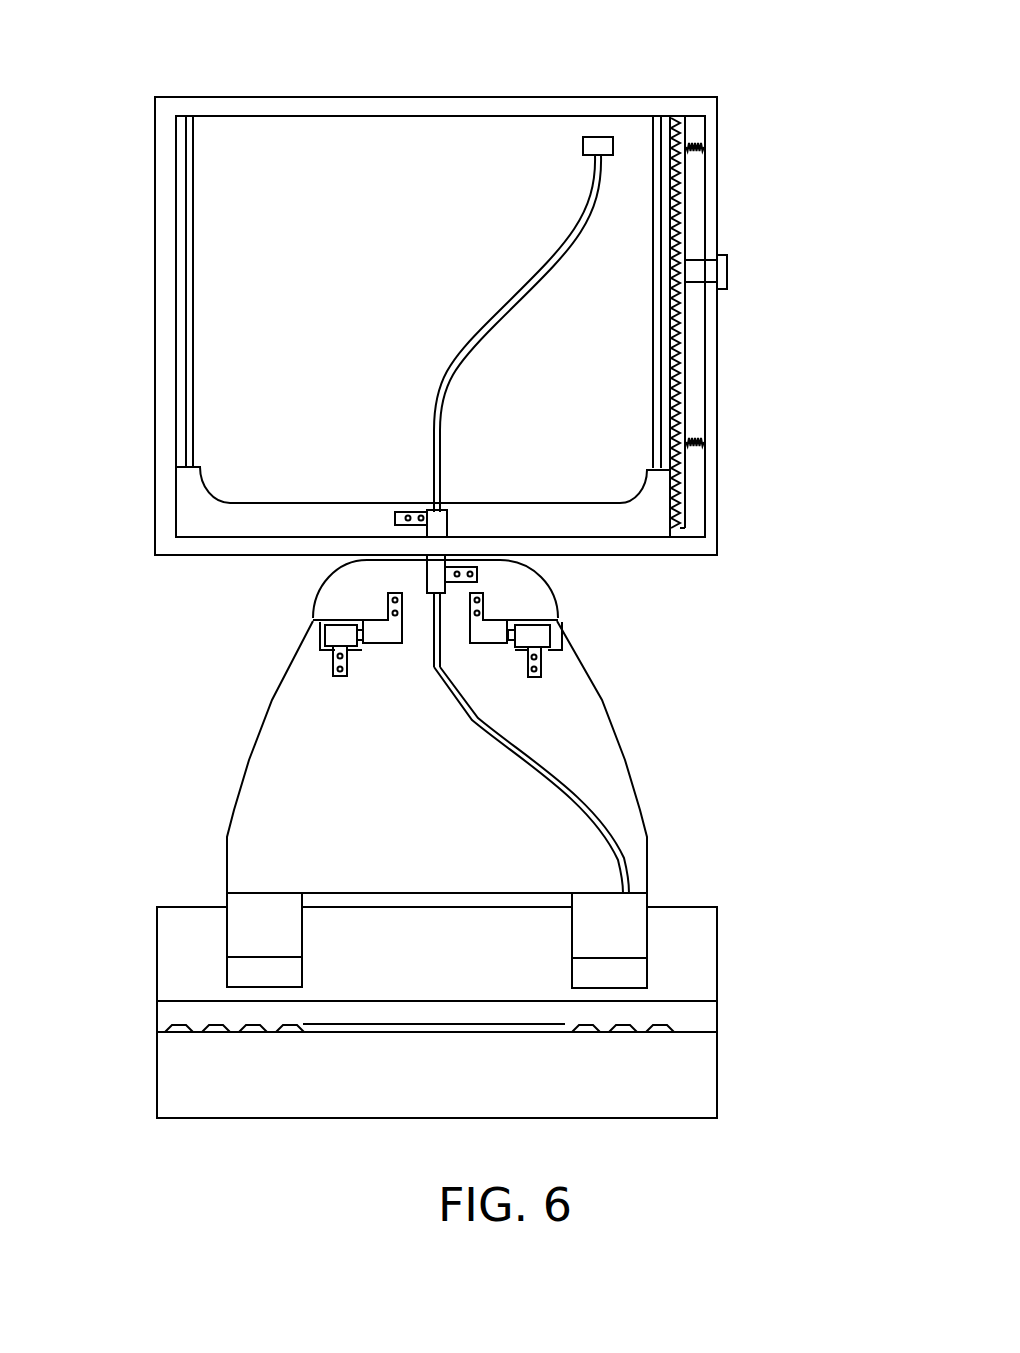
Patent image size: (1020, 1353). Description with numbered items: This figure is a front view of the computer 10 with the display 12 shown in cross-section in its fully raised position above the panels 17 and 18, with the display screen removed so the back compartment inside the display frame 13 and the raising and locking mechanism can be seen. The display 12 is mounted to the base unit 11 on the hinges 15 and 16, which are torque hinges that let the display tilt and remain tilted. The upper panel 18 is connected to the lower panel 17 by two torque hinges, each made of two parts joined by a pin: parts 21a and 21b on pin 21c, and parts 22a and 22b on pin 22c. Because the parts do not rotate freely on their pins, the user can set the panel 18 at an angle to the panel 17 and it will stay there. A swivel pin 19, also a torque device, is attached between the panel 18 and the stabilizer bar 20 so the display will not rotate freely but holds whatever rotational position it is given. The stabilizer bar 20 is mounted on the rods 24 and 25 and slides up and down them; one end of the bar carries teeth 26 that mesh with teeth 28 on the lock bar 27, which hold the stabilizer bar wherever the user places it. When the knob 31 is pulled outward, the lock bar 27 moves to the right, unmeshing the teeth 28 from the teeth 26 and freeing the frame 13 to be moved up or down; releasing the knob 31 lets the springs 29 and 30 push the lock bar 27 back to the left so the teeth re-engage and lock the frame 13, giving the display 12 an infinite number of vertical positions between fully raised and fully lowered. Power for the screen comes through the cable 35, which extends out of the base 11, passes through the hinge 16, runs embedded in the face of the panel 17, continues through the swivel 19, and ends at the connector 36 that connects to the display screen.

The computer 10 is at (321, 1201).
The base unit 11 is at (717, 1076).
The display 12 is at (376, 84).
The frame 13 is at (157, 268).
The hinge 15 is at (245, 970).
The hinge 16 is at (620, 970).
The panel 17 is at (254, 736).
The panel 18 is at (513, 582).
The swivel pin 19 is at (435, 576).
The stabilizer bar 20 is at (250, 525).
The hinge part 21a is at (340, 631).
The hinge part 21b is at (387, 605).
The pin 21c is at (269, 676).
The hinge part 22a is at (537, 635).
The hinge part 22b is at (484, 605).
The pin 22c is at (622, 690).
The rod 24 is at (192, 132).
The rod 25 is at (656, 137).
The teeth 26 is at (676, 503).
The lock bar 27 is at (681, 310).
The teeth 28 is at (673, 370).
The spring 29 is at (702, 148).
The spring 30 is at (702, 442).
The knob 31 is at (728, 265).
The cable 35 is at (576, 227).
The connector 36 is at (598, 138).